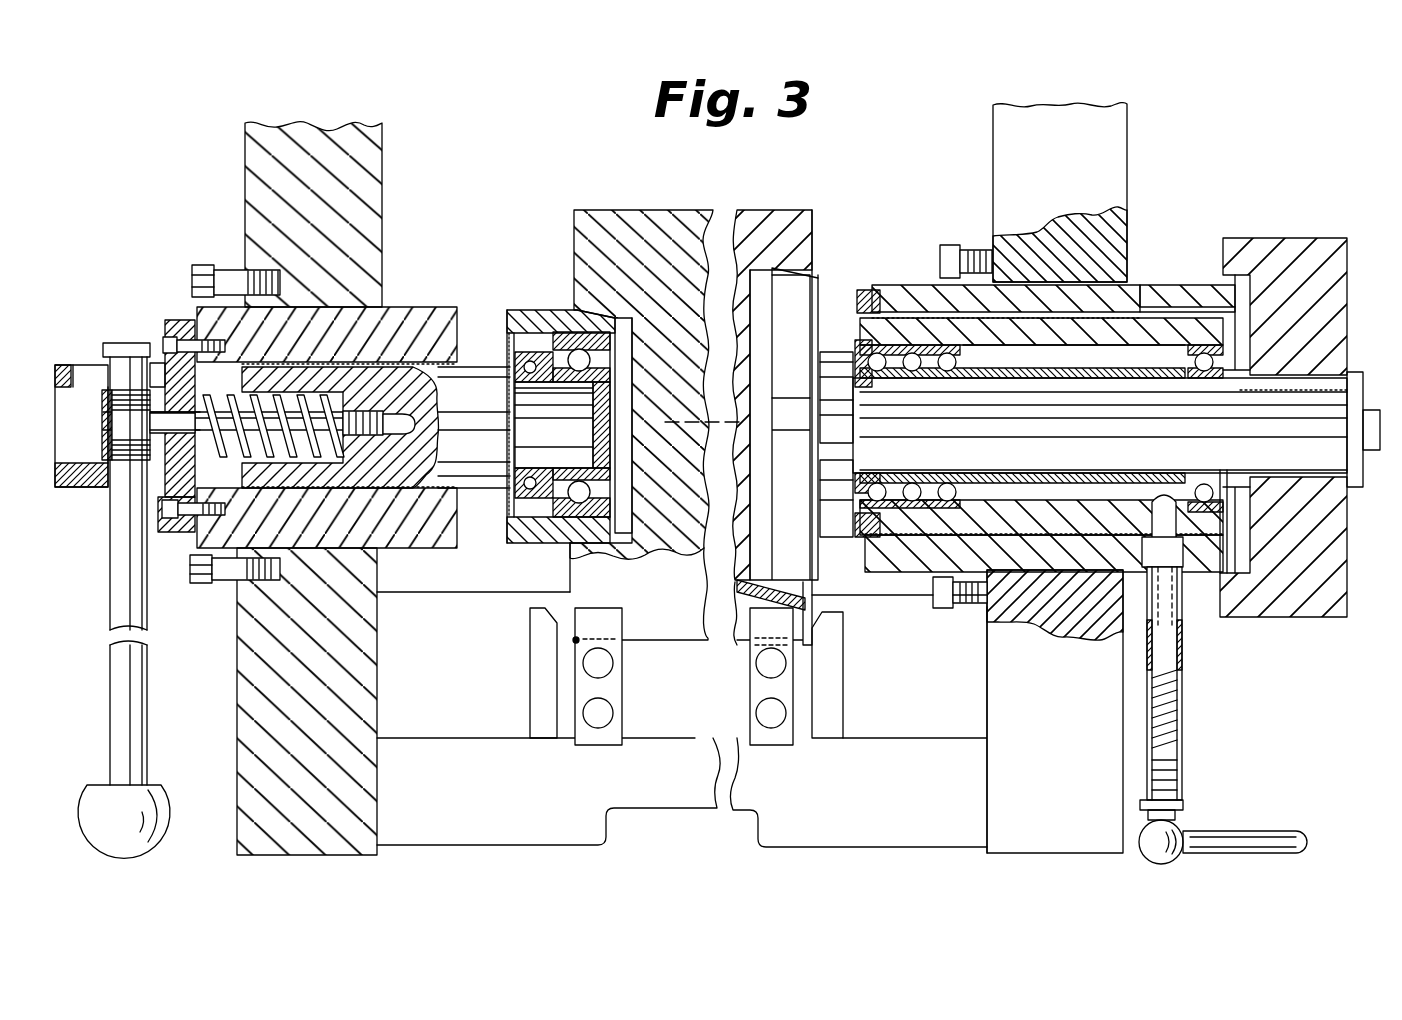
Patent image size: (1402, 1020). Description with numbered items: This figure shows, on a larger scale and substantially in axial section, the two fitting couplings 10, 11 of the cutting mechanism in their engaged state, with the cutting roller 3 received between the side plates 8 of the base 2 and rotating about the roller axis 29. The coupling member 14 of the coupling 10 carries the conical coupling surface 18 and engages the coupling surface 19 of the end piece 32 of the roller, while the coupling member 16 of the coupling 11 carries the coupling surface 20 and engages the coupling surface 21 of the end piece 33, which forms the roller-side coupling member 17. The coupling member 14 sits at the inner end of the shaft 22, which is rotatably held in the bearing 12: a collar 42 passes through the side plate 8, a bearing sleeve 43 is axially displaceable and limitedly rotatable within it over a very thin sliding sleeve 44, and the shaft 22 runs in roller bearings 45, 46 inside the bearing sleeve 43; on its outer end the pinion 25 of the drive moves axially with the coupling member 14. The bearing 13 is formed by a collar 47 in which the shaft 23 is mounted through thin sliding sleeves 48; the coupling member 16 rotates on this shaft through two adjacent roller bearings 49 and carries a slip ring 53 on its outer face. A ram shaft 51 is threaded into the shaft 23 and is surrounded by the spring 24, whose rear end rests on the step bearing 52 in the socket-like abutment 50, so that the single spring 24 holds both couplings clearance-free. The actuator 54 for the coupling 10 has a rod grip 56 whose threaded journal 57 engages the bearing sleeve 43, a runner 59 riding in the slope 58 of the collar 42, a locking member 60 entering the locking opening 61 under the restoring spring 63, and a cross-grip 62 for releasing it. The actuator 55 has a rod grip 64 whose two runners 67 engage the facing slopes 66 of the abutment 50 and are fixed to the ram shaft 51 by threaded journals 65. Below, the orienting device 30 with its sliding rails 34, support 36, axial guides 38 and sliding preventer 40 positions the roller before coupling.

The base 2 is at (683, 836).
The cutting roller 3 is at (680, 200).
The side plate 8 is at (328, 128).
The coupling 10 is at (850, 194).
The coupling 11 is at (545, 252).
The bearing 12 is at (1175, 252).
The bearing 13 is at (462, 257).
The coupling member 14 is at (810, 280).
The coupling member 16 is at (542, 318).
The coupling member 17 is at (626, 490).
The coupling surface 18 is at (800, 268).
The coupling surface 19 is at (816, 282).
The coupling surface 20 is at (640, 290).
The coupling surface 21 is at (620, 330).
The shaft 22 is at (1005, 420).
The shaft 23 is at (465, 500).
The spring 24 is at (305, 455).
The pinion 25 is at (1340, 292).
The roller axis 29 is at (678, 418).
The orienting device 30 is at (885, 661).
The end piece 32 is at (780, 225).
The end piece 33 is at (605, 222).
The sliding rail 34 is at (545, 742).
The support 36 is at (575, 640).
The axial guide 38 is at (540, 630).
The rolling or sliding preventer 40 is at (615, 628).
The collar 42 is at (1075, 302).
The bearing sleeve 43 is at (1000, 530).
The sliding sleeve 44 is at (1005, 560).
The roller bearing 45 is at (947, 375).
The roller bearing 46 is at (1203, 372).
The collar 47 is at (403, 318).
The sliding sleeve 48 is at (395, 494).
The roller bearing 49 is at (520, 384).
The abutment 50 is at (173, 320).
The ram shaft 51 is at (340, 403).
The step bearing 52 is at (236, 489).
The slip ring 53 is at (478, 500).
The actuator 54 is at (1258, 676).
The actuator 55 is at (47, 692).
The rod grip 56 is at (1185, 775).
The threaded journal 57 is at (1165, 496).
The slope 58 is at (1140, 552).
The runner 59 is at (1240, 545).
The locking member 60 is at (1190, 580).
The locking opening 61 is at (1120, 620).
The cross-grip 62 is at (1280, 832).
The restoring spring 63 is at (1180, 708).
The rod grip 64 is at (138, 725).
The threaded journal 65 is at (100, 438).
The slope 66 is at (84, 360).
The runner 67 is at (110, 495).